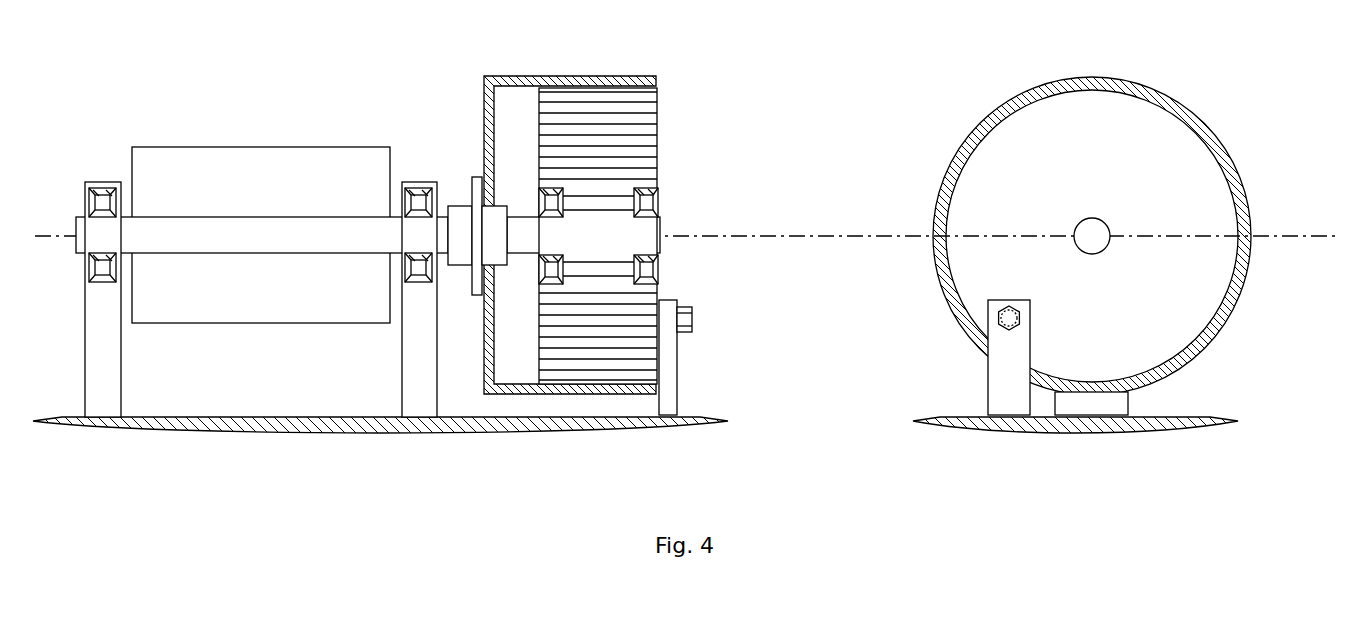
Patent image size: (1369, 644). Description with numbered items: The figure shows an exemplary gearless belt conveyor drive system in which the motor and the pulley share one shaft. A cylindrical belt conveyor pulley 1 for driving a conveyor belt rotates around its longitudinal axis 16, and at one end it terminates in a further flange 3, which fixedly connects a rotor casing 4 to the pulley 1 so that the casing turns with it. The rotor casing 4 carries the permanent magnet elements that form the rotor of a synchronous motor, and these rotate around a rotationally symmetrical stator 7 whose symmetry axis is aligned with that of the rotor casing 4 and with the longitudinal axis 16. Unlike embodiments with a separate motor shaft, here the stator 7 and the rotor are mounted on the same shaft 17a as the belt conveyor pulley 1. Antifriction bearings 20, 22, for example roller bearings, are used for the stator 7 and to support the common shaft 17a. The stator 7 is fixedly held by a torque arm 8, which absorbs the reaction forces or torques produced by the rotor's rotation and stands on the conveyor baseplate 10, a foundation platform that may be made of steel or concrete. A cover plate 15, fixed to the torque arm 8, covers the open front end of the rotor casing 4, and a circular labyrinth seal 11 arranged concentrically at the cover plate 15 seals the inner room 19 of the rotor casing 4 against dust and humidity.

The belt conveyor pulley 1 is at (261, 176).
The further flange 3 is at (451, 180).
The rotor casing 4 is at (881, 209).
The stator 7 is at (770, 185).
The torque arm 8 is at (893, 357).
The conveyor baseplate 10 is at (635, 449).
The labyrinth seal 11 is at (843, 211).
The cover plate 15 is at (653, 220).
The longitudinal axis 16 is at (687, 199).
The shaft 17a is at (593, 302).
The inner room 19 is at (543, 207).
The antifriction bearing 20 is at (261, 260).
The antifriction bearing 22 is at (648, 212).